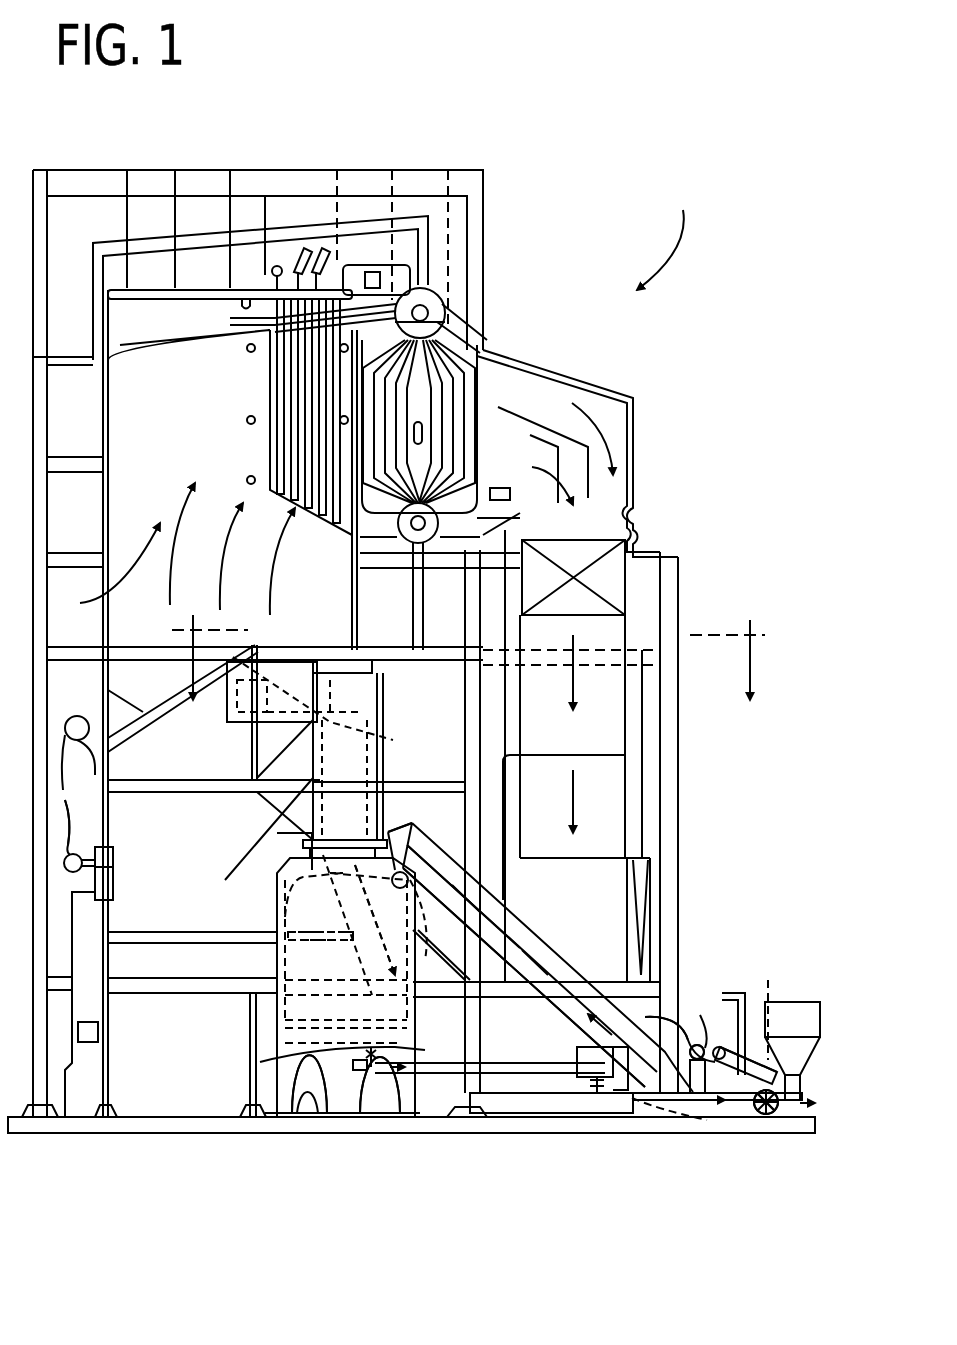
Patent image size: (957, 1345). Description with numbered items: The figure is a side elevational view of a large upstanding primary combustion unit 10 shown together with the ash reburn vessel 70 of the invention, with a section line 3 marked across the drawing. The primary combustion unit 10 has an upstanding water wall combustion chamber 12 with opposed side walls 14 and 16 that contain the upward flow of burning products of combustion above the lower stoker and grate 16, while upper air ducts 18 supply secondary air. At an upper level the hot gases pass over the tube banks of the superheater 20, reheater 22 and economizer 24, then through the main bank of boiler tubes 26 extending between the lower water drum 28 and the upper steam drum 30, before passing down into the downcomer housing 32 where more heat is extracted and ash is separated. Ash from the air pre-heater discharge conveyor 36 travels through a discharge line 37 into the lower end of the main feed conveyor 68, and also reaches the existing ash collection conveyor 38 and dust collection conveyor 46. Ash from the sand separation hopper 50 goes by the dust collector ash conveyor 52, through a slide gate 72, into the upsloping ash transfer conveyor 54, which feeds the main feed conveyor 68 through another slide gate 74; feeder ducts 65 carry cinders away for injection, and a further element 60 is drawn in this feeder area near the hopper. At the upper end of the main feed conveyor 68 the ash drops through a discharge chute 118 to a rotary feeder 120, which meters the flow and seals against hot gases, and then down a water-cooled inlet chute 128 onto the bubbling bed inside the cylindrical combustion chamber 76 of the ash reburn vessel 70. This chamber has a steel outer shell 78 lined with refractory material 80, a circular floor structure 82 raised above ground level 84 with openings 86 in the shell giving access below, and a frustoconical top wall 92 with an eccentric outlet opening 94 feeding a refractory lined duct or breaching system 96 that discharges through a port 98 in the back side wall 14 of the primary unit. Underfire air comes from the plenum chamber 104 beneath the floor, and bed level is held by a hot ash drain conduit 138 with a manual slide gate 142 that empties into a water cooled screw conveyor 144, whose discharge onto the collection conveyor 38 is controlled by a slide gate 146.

The primary combustion unit 10 is at (666, 235).
The water wall combustion chamber 12 is at (106, 569).
The side wall 14 is at (207, 572).
The side wall / stoker and grate 16 is at (115, 1068).
The upper air ducts 18 is at (62, 806).
The superheater 20 is at (278, 363).
The reheater 22 is at (292, 392).
The economizer 24 is at (312, 410).
The main bank of boiler tubes 26 is at (447, 362).
The lower water drum 28 is at (427, 535).
The upper steam drum 30 is at (433, 298).
The downcomer housing 32 is at (642, 448).
The air pre-heater ash discharge conveyor 36 is at (680, 1062).
The discharge line 37 is at (660, 1017).
The ash collection conveyor 38 is at (628, 1100).
The dust collection conveyor 46 is at (745, 1105).
The sand separation hopper 50 is at (765, 1002).
The dust collector system ash conveyor 52 is at (768, 1010).
The ash transfer conveyor 54 is at (718, 1050).
The supply pipe 60 is at (735, 1000).
The feeder ducts 65 is at (795, 1105).
The main feed conveyor 68 is at (538, 948).
The ash reburn vessel 70 is at (192, 960).
The slide gate 72 is at (772, 1120).
The slide gate 74 is at (705, 1100).
The combustion chamber 76 is at (350, 975).
The steel outer shell 78 is at (354, 1103).
The refractory material 80 is at (285, 910).
The circular floor structure 82 is at (312, 1022).
The ground level 84 is at (200, 1110).
The openings 86 is at (370, 1110).
The top wall 92 is at (283, 840).
The outlet opening 94 is at (338, 878).
The duct or breaching system 96 is at (383, 764).
The port 98 is at (282, 655).
The plenum chamber 104 is at (490, 1062).
The discharge chute 118 is at (410, 852).
The rotary feeder 120 is at (440, 874).
The inlet chute 128 is at (395, 968).
The hot ash drain conduit 138 is at (262, 1062).
The manual slide gate 142 is at (400, 1047).
The water cooled screw conveyor 144 is at (502, 1070).
The slide gate 146 is at (540, 1090).
The section line 3- 3 is at (470, 652).